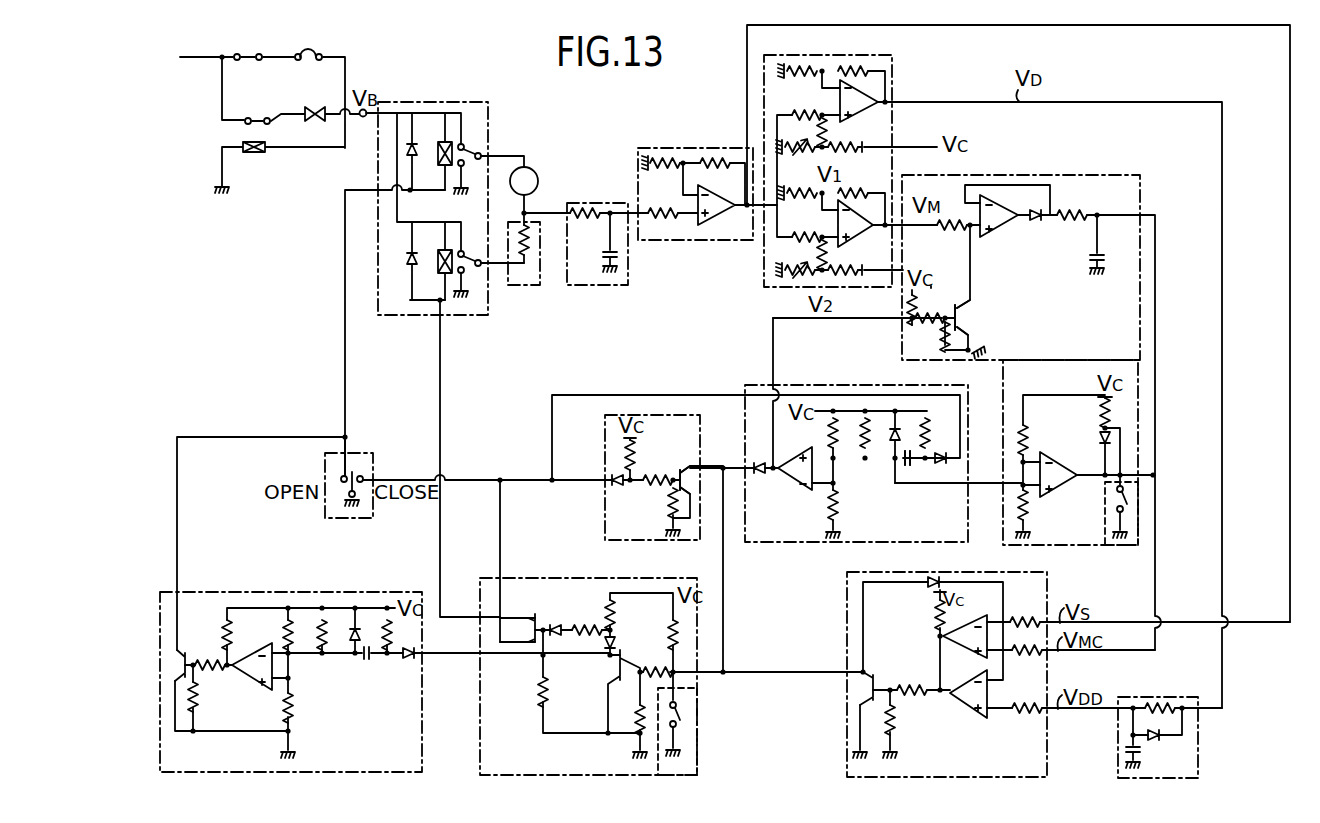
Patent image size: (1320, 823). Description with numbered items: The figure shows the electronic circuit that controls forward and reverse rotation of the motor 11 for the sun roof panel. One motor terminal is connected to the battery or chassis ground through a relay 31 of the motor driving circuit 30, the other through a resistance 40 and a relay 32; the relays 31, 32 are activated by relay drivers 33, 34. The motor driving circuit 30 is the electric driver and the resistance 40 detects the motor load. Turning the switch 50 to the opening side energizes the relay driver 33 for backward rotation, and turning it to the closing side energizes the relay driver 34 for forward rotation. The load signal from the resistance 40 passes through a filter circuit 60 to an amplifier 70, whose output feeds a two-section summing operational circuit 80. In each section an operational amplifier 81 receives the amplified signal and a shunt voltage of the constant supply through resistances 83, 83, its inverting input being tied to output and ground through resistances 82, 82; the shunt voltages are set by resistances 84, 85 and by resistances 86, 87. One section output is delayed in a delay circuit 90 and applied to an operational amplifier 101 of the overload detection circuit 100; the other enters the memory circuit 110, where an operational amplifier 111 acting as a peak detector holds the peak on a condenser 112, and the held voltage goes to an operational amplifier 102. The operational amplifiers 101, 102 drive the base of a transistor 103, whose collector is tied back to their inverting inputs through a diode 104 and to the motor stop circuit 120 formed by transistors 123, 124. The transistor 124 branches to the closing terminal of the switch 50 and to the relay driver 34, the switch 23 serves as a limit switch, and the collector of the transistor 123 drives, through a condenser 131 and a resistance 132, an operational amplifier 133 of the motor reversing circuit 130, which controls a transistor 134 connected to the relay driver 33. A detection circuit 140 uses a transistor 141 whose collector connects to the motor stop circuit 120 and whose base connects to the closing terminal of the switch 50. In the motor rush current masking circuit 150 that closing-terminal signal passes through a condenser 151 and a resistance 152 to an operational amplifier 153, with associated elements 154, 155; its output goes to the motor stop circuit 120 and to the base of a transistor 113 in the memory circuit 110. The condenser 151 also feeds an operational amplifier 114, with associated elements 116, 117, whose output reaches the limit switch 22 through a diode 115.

The motor 11 is at (536, 168).
The limit switch 22 is at (1085, 547).
The switch 23 is at (697, 710).
The motor driving circuit 30 is at (440, 102).
The relay 31 is at (491, 138).
The relay 32 is at (491, 249).
The relay driver 33 is at (436, 156).
The relay driver 34 is at (436, 264).
The resistance 40 is at (538, 268).
The switch for opening and closing the sun roof 50 is at (352, 453).
The filter circuit 60 is at (577, 208).
The amplifier 70 is at (662, 148).
The summing operational circuit 80 is at (896, 82).
The operational amplifier 81 is at (906, 236).
The resistance 82 is at (805, 196).
The resistance 83 is at (838, 246).
The resistance 84 is at (804, 153).
The resistance 85 is at (850, 151).
The resistance 86 is at (797, 280).
The resistance 87 is at (846, 280).
The delay circuit 90 is at (1198, 718).
The overload detection circuit 100 is at (1047, 745).
The operational amplifier 101 is at (966, 703).
The operational amplifier 102 is at (962, 628).
The transistor 103 is at (871, 679).
The diode 104 is at (930, 590).
The memory circuit 110 is at (1095, 176).
The operational amplifier 111 is at (990, 230).
The condenser 112 is at (1090, 262).
The transistor 113 is at (975, 320).
The operational amplifier 114 is at (1057, 487).
The diode 115 is at (1098, 441).
The resistor 116 is at (1029, 440).
The resistor 117 is at (1030, 515).
The motor stop circuit 120 is at (510, 578).
The transistor 123 is at (622, 655).
The transistor 124 is at (527, 620).
The motor reversing circuit 130 is at (280, 592).
The capacitor 131 is at (368, 662).
The resistance 132 is at (318, 636).
The operational amplifier 133 is at (250, 688).
The transistor 134 is at (183, 652).
The detection circuit for opening and closing the sun roof 140 is at (620, 541).
The transistor 141 is at (678, 468).
The motor rush current masking circuit 150 is at (779, 386).
The condenser 151 is at (912, 470).
The resistance 152 is at (874, 448).
The operational amplifier 153 is at (790, 484).
The resistor 154 is at (836, 430).
The resistor 155 is at (834, 512).